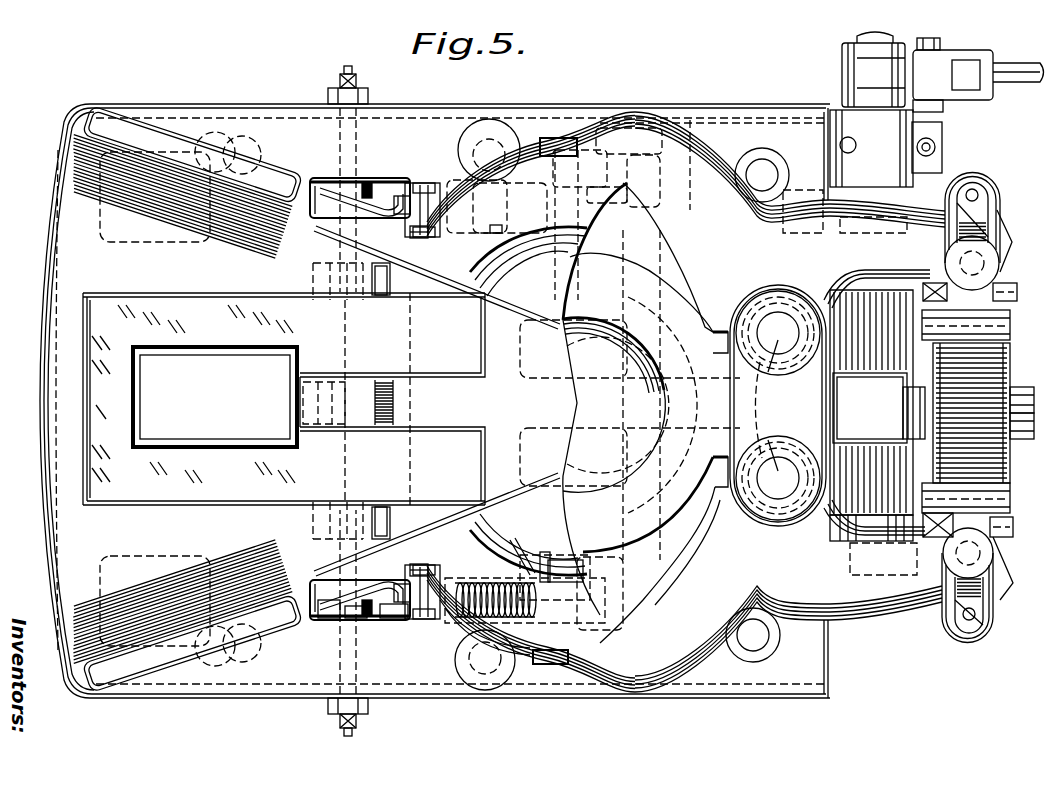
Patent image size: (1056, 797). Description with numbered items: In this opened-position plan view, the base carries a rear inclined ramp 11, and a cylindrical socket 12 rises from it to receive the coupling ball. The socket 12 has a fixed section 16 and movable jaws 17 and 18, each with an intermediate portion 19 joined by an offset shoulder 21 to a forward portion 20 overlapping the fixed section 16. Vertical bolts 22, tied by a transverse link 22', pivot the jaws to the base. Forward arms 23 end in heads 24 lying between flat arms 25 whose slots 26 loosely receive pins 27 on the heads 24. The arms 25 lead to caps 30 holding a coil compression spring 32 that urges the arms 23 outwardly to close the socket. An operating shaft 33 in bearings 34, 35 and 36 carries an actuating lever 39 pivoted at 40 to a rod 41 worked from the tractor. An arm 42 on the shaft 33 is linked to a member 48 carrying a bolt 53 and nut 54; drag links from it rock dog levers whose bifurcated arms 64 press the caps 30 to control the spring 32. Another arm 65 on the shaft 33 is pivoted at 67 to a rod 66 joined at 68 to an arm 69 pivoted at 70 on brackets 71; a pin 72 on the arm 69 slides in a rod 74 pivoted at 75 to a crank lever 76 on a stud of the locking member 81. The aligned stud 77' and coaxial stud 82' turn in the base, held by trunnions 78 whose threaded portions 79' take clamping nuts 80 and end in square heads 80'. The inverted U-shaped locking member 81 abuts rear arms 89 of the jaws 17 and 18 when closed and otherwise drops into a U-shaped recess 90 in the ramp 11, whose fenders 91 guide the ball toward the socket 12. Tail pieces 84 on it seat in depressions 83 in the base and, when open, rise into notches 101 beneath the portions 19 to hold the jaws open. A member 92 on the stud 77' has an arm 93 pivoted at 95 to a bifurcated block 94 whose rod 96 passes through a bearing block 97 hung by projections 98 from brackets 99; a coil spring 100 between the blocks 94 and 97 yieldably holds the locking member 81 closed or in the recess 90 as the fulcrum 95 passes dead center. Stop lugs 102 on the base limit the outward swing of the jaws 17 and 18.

The housing shell 11 is at (82, 270).
The spring disk 12 is at (616, 404).
The cam member 16 is at (705, 305).
The lower cover plate 17 is at (457, 633).
The pivot boss 18 is at (467, 187).
The cover flange 19 is at (530, 148).
The housing lobe wall 20 is at (680, 145).
The cover bend 21 is at (603, 118).
The roller 22 is at (778, 405).
The roller guide 22' is at (721, 410).
The link arm 23 is at (935, 226).
The link 24 is at (978, 230).
The slot 25 is at (976, 187).
The pin 26 is at (973, 193).
The bracket 27 is at (1006, 268).
The spring seat 30 is at (1008, 336).
The adjusting screw 32 is at (1010, 362).
The cylinder 33 is at (868, 36).
The clamp block 34 is at (943, 142).
The upper guide 35 is at (845, 275).
The lower guide 36 is at (845, 538).
The clamp 39 is at (948, 100).
The clamp bolt 40 is at (932, 42).
The rod 41 is at (1015, 66).
The shaft housing 42 is at (834, 404).
The bushing 48 is at (918, 386).
The nut 53 is at (1025, 398).
The lock nut 54 is at (1020, 432).
The pivot pin 64 is at (950, 278).
The bracket bar 65 is at (902, 207).
The housing cavity 66 is at (713, 187).
The boss 67 is at (800, 185).
The arcuate rib 68 is at (525, 272).
The pocket 69 is at (545, 190).
The pocket 70 is at (575, 180).
The recess 71 is at (605, 158).
The lug 72 is at (630, 185).
The bolt head 74 is at (462, 192).
The bracket 75 is at (421, 182).
The stop block 76 is at (366, 184).
The casing wall 77' is at (460, 401).
The bolt 78 is at (350, 150).
The washer 79' is at (353, 397).
The nut 80 is at (373, 415).
The bolt end 80' is at (334, 403).
The frame plate 81 is at (110, 382).
The hub 82' is at (319, 402).
The arm 83 is at (482, 362).
The spacer 84 is at (433, 448).
The guide bracket 89 is at (335, 190).
The frame 90 is at (94, 502).
The bar 91 is at (106, 240).
The block 92 is at (333, 618).
The block 93 is at (365, 620).
The block 94 is at (392, 620).
The coil spring 95 is at (457, 630).
The cam edge 96 is at (688, 602).
The recess 97 is at (610, 634).
The lug 98 is at (560, 558).
The pin 99 is at (545, 553).
The rod end 100 is at (515, 540).
The rod 101 is at (353, 295).
The stop 102 is at (560, 138).